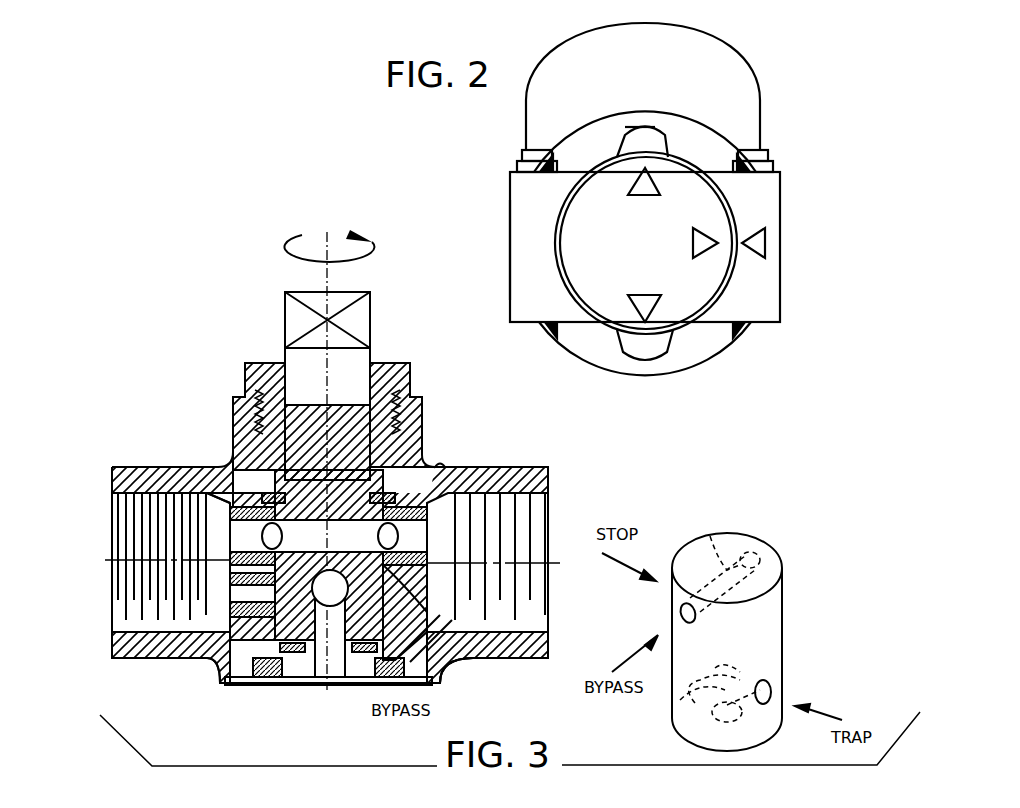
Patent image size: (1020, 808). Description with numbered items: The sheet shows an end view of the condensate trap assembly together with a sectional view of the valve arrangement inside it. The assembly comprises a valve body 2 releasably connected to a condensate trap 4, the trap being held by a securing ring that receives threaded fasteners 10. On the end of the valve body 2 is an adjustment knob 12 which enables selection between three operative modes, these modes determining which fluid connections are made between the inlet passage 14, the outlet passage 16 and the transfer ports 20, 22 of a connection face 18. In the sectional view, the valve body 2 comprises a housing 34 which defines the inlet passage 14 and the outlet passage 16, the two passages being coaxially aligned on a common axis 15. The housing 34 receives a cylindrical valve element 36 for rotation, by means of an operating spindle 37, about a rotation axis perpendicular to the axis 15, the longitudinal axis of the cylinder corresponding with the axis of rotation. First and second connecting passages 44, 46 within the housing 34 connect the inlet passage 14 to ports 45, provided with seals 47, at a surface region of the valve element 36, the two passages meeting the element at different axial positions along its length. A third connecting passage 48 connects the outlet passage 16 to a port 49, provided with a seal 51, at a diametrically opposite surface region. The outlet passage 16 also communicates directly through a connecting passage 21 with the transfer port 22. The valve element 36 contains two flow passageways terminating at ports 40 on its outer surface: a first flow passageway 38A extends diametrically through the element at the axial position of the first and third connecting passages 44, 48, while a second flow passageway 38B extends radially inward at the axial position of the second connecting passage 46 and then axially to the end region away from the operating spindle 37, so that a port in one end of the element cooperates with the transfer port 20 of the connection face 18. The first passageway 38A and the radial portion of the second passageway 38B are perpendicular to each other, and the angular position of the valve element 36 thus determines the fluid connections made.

In FIG. 3, the valve body 2 is at (420, 353).
In FIG. 2, the condensate trap 4 is at (768, 106).
In FIG. 2, the threaded fasteners 10 is at (645, 135).
In FIG. 2, the adjustment knob 12 is at (706, 288).
In FIG. 2, the inlet passage 14 is at (781, 193).
In FIG. 3, the inlet passage 14 is at (100, 478).
In FIG. 3, the axis 15 is at (140, 660).
In FIG. 2, the outlet passage 16 is at (510, 288).
In FIG. 3, the outlet passage 16 is at (555, 478).
In FIG. 3, the connection face 18 is at (442, 663).
In FIG. 3, the transfer port 20 is at (327, 685).
In FIG. 3, the connecting passage 21 is at (462, 668).
In FIG. 3, the transfer port 22 is at (285, 688).
In FIG. 3, the housing 34 is at (438, 468).
In FIG. 3, the valve element 36 is at (357, 626).
In FIG. 3, the operating spindle 37 is at (305, 470).
In FIG. 3, the first flow passageway 38A is at (710, 543).
In FIG. 3, the second flow passageway 38B is at (690, 708).
In FIG. 3, the ports 40 is at (680, 611).
In FIG. 3, the first connecting passage 44 is at (233, 463).
In FIG. 3, the ports 45 is at (282, 536).
In FIG. 3, the second connecting passage 46 is at (230, 625).
In FIG. 3, the seals 47 is at (262, 520).
In FIG. 3, the third connecting passage 48 is at (455, 478).
In FIG. 3, the port 49 is at (390, 541).
In FIG. 3, the seal 51 is at (450, 618).